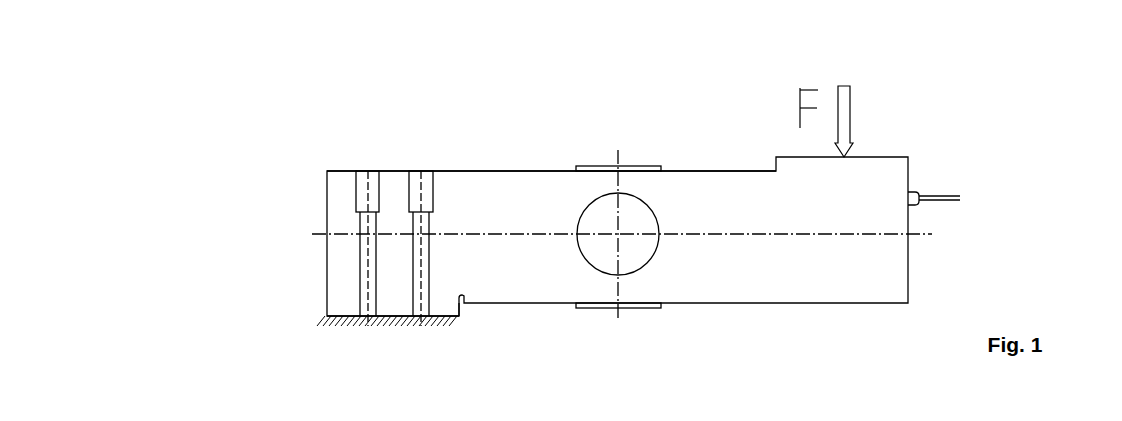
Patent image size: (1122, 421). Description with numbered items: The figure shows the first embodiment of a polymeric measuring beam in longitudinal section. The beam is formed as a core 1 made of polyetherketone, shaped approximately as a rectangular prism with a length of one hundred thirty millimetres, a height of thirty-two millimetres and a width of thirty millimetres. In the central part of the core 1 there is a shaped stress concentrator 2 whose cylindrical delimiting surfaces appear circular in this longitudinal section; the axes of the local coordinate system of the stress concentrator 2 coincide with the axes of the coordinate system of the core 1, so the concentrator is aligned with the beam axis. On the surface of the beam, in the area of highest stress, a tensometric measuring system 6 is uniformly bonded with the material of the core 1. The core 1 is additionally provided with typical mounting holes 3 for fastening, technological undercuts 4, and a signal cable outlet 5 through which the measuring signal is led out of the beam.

The core 1 is at (482, 293).
The stress concentrator 2 is at (645, 295).
The mounting holes 3 is at (394, 285).
The technological undercuts 4 is at (617, 162).
The signal cable outlet 5 is at (1011, 117).
The tensometric measuring system 6 is at (578, 303).